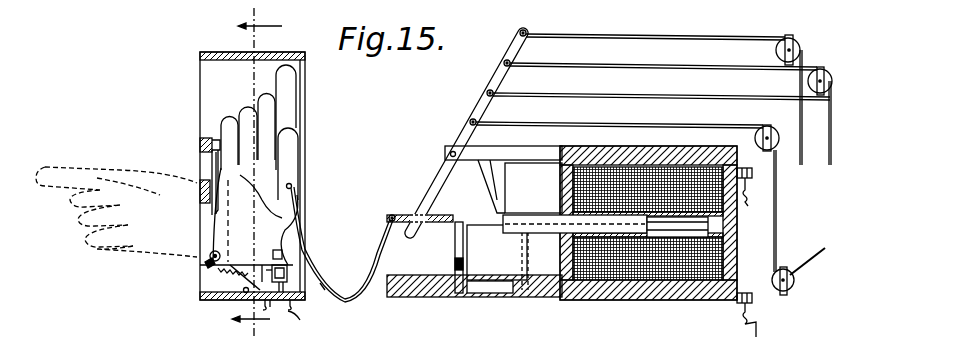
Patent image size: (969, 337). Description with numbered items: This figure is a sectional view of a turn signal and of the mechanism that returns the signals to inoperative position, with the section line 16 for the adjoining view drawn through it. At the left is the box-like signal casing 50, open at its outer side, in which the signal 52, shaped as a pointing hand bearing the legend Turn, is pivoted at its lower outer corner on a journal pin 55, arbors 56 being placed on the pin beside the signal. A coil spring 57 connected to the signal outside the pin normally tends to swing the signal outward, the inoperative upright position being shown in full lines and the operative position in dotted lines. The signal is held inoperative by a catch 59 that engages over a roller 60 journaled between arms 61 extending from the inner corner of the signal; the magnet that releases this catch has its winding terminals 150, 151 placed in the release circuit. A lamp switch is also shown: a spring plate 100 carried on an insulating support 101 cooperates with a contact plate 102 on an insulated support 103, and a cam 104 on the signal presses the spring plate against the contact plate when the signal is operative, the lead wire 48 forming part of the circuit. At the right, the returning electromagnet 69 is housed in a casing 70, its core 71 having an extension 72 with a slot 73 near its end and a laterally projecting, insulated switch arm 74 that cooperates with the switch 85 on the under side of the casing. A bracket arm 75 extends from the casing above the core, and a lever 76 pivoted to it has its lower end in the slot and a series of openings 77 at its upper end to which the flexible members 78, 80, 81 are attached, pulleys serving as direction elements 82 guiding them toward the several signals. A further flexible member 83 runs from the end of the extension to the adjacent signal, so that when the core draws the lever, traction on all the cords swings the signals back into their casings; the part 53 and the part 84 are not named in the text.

The section line 16 is at (257, 168).
The lead wire 48 is at (752, 198).
The signal casing 50 is at (288, 55).
The signal 52 is at (298, 157).
The flexible cord 53 is at (277, 203).
The journal pin 55 is at (210, 256).
The arbor 56 is at (207, 264).
The coil spring 57 is at (226, 281).
The catch 59 is at (288, 265).
The roller 60 is at (258, 278).
The arms 61 is at (263, 264).
The electromagnet 69 is at (682, 162).
The casing 70 is at (713, 97).
The core 71 is at (522, 215).
The extension 72 is at (440, 217).
The slot 73 is at (428, 223).
The switch arm 74 is at (463, 272).
The bracket arm 75 is at (522, 150).
The lever 76 is at (430, 185).
The openings 77 is at (527, 32).
The flexible member 78 is at (778, 222).
The flexible member 80 is at (712, 67).
The flexible member 81 is at (690, 37).
The direction element 82 is at (823, 72).
The flexible member 83 is at (320, 282).
The core block 84 is at (533, 188).
The switch 85 is at (432, 297).
The spring plate 100 is at (290, 178).
The insulating support 101 is at (211, 138).
The contact plate 102 is at (214, 206).
The insulated support 103 is at (202, 186).
The cam 104 is at (283, 255).
The terminal 150 is at (296, 310).
The terminal 151 is at (304, 322).